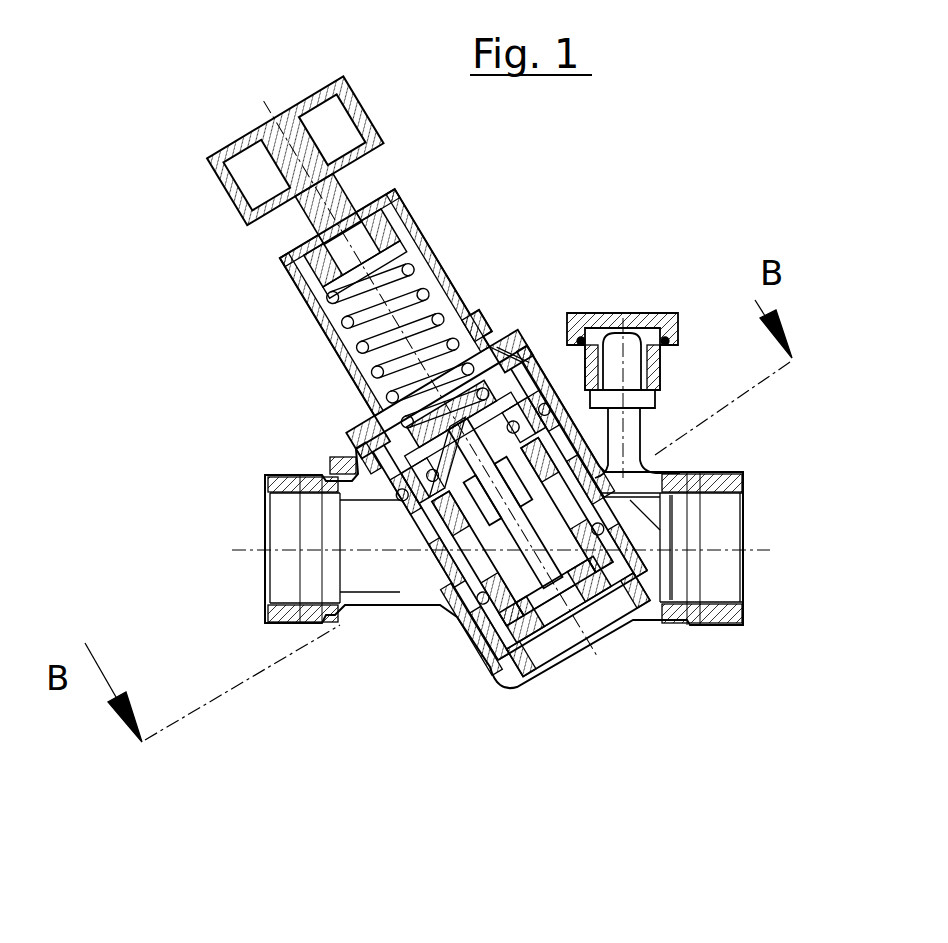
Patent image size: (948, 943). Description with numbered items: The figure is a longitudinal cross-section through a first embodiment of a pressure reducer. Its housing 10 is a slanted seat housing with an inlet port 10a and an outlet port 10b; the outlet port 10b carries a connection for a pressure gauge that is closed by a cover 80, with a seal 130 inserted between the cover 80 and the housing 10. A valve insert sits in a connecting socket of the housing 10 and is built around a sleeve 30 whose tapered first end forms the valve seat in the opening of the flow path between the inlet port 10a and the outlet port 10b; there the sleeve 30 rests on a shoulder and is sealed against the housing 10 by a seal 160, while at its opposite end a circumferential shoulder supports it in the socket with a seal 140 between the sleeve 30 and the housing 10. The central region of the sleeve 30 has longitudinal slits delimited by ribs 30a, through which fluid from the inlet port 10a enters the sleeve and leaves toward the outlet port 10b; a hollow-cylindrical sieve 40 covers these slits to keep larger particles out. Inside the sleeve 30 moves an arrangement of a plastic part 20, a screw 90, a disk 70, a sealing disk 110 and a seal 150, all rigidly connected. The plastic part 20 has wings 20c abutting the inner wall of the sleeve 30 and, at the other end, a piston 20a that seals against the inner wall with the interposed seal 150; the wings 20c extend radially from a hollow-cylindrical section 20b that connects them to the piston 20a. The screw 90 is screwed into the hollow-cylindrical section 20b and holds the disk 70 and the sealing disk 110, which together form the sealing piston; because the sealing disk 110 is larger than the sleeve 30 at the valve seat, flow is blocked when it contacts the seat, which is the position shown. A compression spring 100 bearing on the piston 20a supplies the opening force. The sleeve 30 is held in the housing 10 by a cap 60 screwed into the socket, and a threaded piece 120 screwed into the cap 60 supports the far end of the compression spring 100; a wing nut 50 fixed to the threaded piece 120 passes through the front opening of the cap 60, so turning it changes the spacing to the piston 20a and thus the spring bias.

The housing 10 is at (469, 616).
The inlet port 10a is at (290, 568).
The outlet port 10b is at (722, 558).
The plastic part 20 is at (372, 423).
The piston 20a is at (569, 322).
The hollow-cylindrical section 20b is at (398, 497).
The wings 20c is at (605, 487).
The sleeve 30 is at (400, 488).
The ribs 30a is at (430, 540).
The sieve 40 is at (470, 528).
The wing nut 50 is at (212, 157).
The cap 60 is at (310, 300).
The disk 70 is at (570, 605).
The cover 80 is at (679, 313).
The screw 90 is at (578, 614).
The compression spring 100 is at (355, 345).
The sealing disk 110 is at (733, 625).
The threaded piece 120 is at (355, 248).
The seal 130 is at (677, 333).
The seal 140 is at (640, 313).
The seal 150 is at (455, 453).
The seal 160 is at (610, 525).